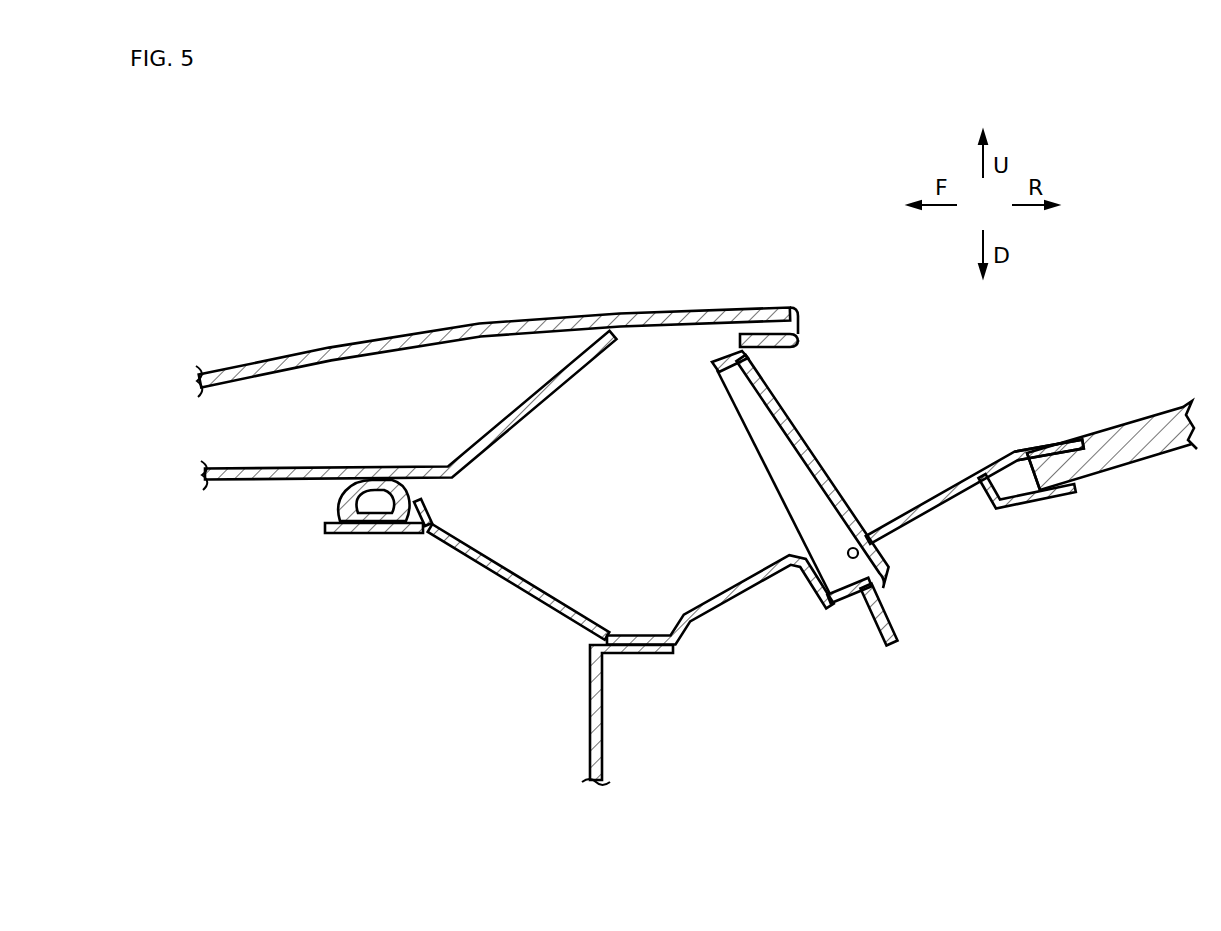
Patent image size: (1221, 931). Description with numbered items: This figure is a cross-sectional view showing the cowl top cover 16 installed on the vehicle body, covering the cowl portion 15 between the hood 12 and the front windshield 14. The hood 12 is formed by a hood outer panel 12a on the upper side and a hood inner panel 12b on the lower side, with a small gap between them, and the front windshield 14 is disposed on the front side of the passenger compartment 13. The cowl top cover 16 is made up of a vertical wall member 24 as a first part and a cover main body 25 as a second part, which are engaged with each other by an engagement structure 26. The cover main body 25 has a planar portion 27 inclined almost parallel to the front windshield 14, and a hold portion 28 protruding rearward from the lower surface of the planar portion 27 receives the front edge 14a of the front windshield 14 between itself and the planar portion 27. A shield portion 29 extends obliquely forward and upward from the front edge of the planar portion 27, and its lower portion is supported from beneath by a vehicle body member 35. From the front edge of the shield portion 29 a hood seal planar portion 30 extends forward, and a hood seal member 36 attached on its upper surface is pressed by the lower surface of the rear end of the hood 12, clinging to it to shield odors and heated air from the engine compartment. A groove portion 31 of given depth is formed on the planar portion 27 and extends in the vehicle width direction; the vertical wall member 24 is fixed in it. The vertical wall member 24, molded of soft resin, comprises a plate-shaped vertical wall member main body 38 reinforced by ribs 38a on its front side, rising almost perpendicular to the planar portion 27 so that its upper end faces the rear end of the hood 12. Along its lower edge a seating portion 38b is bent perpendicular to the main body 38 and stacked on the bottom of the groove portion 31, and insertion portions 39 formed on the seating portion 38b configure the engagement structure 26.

The hood 12 is at (529, 318).
The hood outer panel 12a is at (613, 318).
The hood inner panel 12b is at (552, 394).
The passenger compartment 13 is at (1123, 536).
The front windshield 14 is at (1138, 436).
The front edge of the front windshield 14a is at (1070, 456).
The cowl portion 15 is at (737, 615).
The cowl top cover 16 is at (894, 440).
The vertical wall member 24 is at (785, 398).
The cover main body 25 is at (957, 480).
The engagement structure 26 is at (910, 605).
The planar portion 27 is at (1013, 452).
The hold portion 28 is at (1037, 507).
The shield portion 29 is at (540, 584).
The hood seal planar portion 30 is at (380, 508).
The groove portion 31 is at (862, 553).
The vehicle body member 35 is at (590, 711).
The hood seal member 36 is at (343, 493).
The vertical wall member main body 38 is at (810, 446).
The ribs 38a is at (748, 430).
The seating portion 38b is at (834, 607).
The insertion portions 39 is at (868, 625).